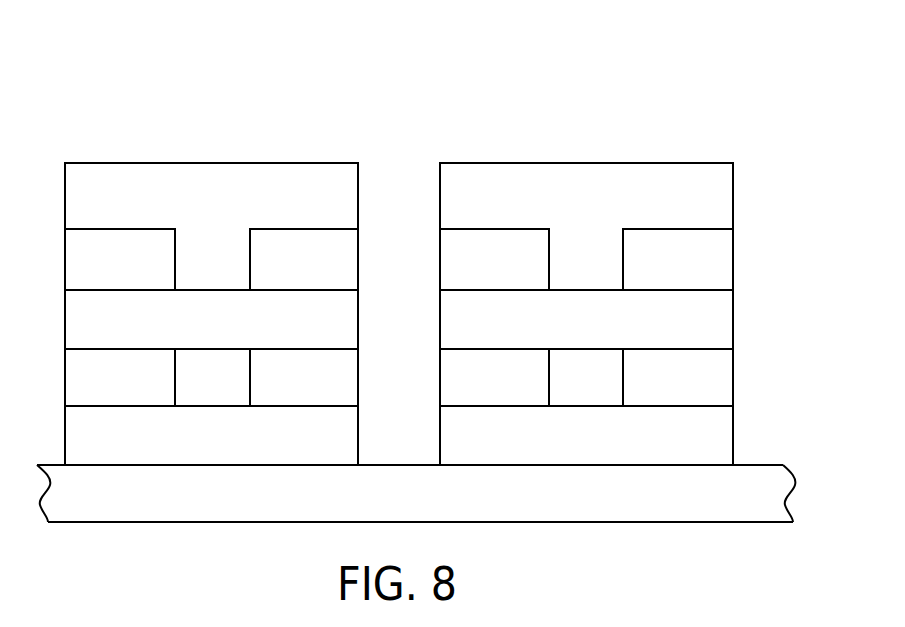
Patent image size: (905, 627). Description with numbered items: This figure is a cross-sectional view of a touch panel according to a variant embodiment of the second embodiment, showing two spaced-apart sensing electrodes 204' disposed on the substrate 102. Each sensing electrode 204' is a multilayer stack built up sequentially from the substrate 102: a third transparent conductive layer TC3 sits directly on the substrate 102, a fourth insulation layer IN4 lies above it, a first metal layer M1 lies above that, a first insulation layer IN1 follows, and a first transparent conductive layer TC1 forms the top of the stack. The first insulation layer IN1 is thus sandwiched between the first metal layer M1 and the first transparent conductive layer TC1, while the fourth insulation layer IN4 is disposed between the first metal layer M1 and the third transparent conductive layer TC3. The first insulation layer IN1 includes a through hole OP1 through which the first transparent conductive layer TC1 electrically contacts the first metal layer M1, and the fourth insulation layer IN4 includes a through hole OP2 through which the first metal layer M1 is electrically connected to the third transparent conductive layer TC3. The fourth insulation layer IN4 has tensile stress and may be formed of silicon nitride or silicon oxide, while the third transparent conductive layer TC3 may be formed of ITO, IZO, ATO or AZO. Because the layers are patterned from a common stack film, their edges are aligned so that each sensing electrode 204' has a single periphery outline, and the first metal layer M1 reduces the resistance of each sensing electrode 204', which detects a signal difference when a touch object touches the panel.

The sensing electrode 204' is at (442, 264).
The through hole OP1 is at (202, 243).
The through hole OP2 is at (193, 370).
The first transparent conductive layer TC1 is at (350, 204).
The first insulation layer IN1 is at (343, 272).
The first metal layer M1 is at (347, 334).
The fourth insulation layer IN4 is at (343, 394).
The third transparent conductive layer TC3 is at (350, 454).
The substrate 102 is at (422, 507).